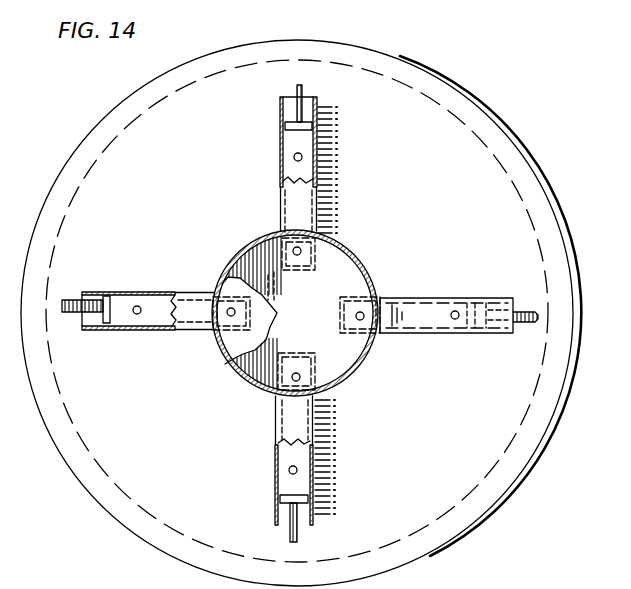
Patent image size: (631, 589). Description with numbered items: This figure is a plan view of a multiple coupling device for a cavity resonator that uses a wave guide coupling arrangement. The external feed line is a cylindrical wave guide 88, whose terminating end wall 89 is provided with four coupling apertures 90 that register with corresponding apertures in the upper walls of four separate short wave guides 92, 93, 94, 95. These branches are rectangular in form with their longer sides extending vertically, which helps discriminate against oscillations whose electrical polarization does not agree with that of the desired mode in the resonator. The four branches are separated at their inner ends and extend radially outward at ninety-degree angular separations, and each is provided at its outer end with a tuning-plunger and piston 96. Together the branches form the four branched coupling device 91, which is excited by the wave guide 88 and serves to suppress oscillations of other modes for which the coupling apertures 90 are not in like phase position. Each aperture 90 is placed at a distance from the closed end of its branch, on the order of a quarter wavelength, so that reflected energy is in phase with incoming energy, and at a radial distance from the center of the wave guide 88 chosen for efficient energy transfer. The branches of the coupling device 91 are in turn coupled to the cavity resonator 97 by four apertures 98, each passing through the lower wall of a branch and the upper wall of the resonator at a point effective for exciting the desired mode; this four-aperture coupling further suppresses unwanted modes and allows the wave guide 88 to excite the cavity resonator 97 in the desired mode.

The cylindrical wave guide 88 is at (346, 248).
The terminating end wall 89 is at (244, 353).
The coupling apertures 90 is at (226, 308).
The four branched coupling device 91 is at (339, 317).
The short wave guide 92 is at (290, 172).
The short wave guide 93 is at (438, 308).
The short wave guide 94 is at (303, 456).
The short wave guide 95 is at (162, 318).
The tuning-plunger and piston 96 is at (287, 124).
The cavity resonator 97 is at (508, 179).
The apertures 98 is at (295, 155).